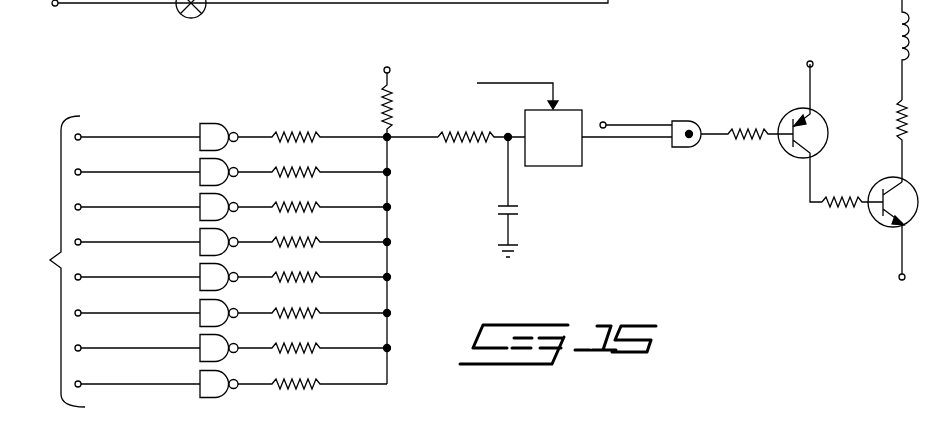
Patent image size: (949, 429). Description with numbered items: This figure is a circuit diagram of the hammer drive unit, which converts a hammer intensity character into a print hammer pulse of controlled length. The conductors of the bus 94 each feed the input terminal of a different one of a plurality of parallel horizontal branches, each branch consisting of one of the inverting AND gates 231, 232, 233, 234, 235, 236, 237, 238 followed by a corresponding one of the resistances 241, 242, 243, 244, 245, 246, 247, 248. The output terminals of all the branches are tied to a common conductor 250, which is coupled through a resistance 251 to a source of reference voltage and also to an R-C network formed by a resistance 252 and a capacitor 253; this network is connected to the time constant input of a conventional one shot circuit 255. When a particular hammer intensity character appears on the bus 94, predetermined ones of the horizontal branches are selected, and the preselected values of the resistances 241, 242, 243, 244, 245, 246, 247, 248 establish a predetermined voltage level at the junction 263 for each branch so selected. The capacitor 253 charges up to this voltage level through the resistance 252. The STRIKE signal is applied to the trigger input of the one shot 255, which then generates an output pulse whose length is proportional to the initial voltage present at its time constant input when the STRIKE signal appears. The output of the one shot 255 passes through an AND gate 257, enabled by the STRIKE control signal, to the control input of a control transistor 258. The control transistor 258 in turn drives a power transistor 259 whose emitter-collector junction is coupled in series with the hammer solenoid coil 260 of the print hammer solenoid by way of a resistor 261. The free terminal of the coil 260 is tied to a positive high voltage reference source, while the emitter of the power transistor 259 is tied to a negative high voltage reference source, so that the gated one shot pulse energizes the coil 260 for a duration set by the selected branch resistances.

The bus 94 is at (49, 261).
The inverting AND gate 231 is at (203, 126).
The inverting AND gate 232 is at (204, 161).
The inverting AND gate 233 is at (204, 196).
The inverting AND gate 234 is at (204, 231).
The inverting AND gate 235 is at (204, 267).
The inverting AND gate 236 is at (204, 303).
The inverting AND gate 237 is at (204, 338).
The inverting AND gate 238 is at (204, 374).
The resistance 241 is at (302, 131).
The resistance 242 is at (306, 170).
The resistance 243 is at (306, 205).
The resistance 244 is at (307, 241).
The resistance 245 is at (309, 277).
The resistance 246 is at (309, 313).
The resistance 247 is at (309, 348).
The resistance 248 is at (309, 384).
The common conductor 250 is at (392, 256).
The pull-up resistor 251 is at (383, 113).
The resistance 252 is at (443, 133).
The capacitor 253 is at (497, 208).
The one shot circuit 255 is at (570, 110).
The AND gate 257 is at (689, 121).
The control transistor 258 is at (792, 113).
The power transistor 259 is at (878, 223).
The hammer solenoid coil 260 is at (893, 42).
The resistor 261 is at (895, 108).
The junction 263 is at (391, 135).